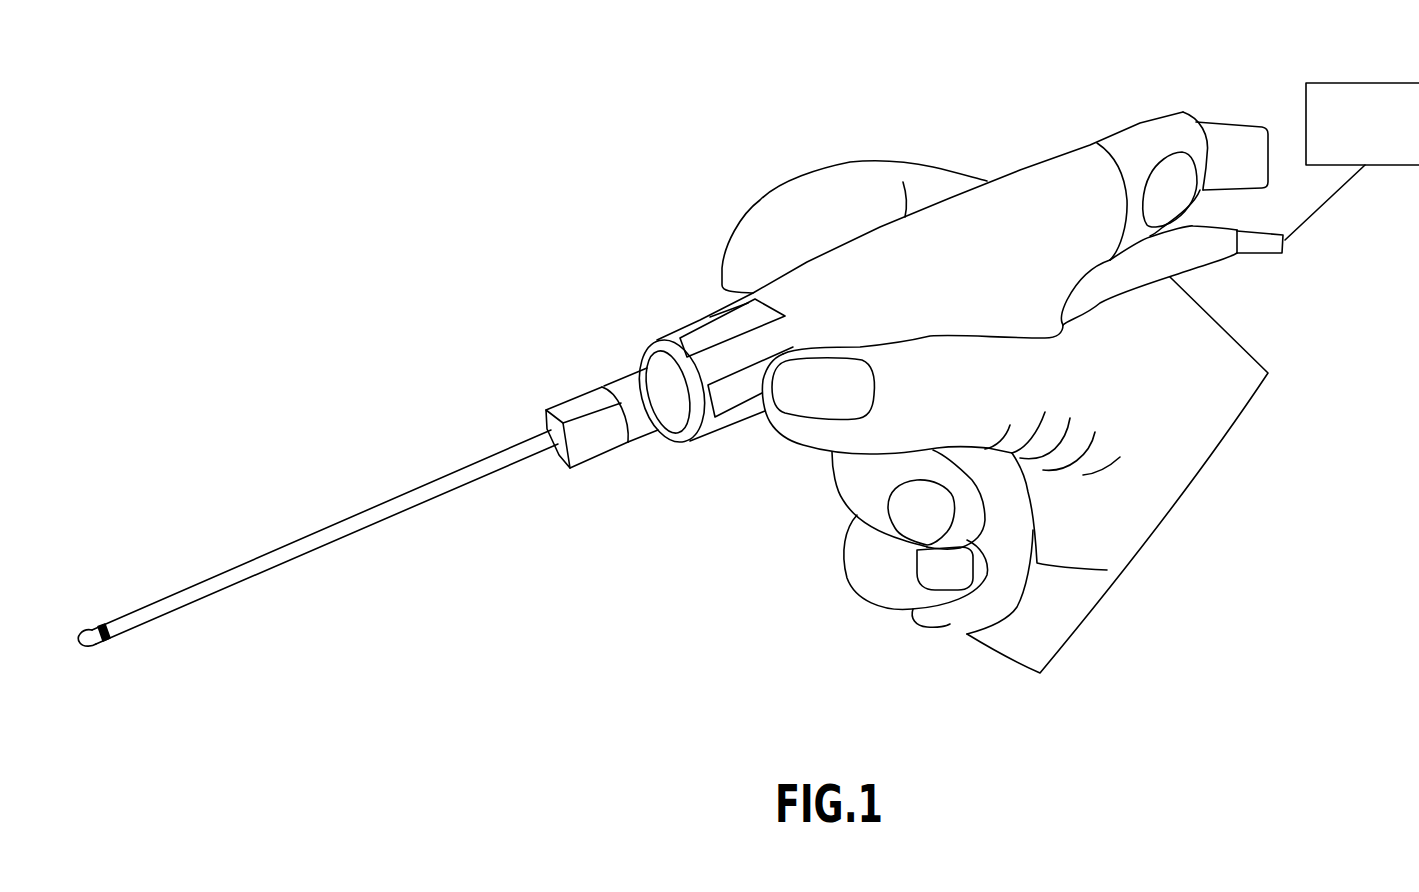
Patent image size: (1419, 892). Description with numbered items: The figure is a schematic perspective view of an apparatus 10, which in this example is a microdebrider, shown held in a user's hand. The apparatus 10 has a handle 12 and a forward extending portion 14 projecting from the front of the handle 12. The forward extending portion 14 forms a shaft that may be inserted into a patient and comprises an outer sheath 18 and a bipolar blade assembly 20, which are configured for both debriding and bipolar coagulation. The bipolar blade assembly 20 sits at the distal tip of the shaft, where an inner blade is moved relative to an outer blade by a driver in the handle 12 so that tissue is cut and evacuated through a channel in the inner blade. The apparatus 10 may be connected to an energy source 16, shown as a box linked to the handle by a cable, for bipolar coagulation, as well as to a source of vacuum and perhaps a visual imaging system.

The apparatus 10 is at (416, 369).
The handle 12 is at (1027, 192).
The forward extending portion 14 is at (123, 634).
The energy source 16 is at (1330, 83).
The outer sheath 18 is at (363, 530).
The bipolar blade assembly 20 is at (93, 612).